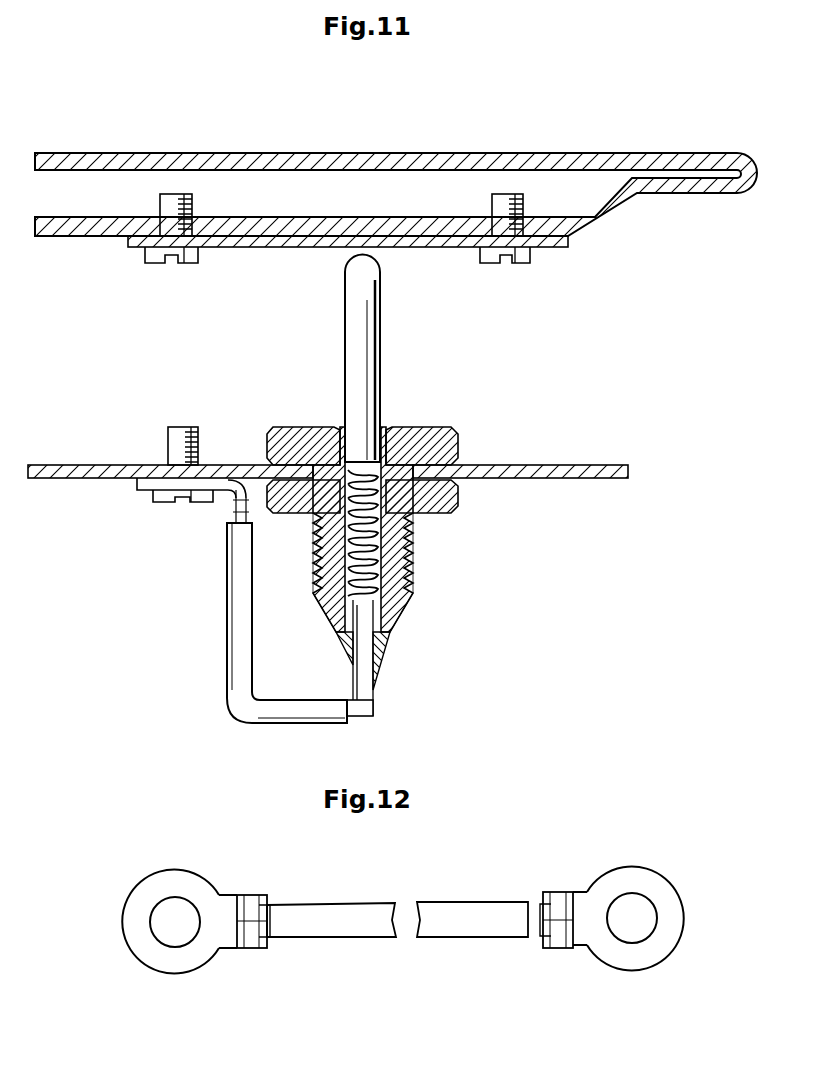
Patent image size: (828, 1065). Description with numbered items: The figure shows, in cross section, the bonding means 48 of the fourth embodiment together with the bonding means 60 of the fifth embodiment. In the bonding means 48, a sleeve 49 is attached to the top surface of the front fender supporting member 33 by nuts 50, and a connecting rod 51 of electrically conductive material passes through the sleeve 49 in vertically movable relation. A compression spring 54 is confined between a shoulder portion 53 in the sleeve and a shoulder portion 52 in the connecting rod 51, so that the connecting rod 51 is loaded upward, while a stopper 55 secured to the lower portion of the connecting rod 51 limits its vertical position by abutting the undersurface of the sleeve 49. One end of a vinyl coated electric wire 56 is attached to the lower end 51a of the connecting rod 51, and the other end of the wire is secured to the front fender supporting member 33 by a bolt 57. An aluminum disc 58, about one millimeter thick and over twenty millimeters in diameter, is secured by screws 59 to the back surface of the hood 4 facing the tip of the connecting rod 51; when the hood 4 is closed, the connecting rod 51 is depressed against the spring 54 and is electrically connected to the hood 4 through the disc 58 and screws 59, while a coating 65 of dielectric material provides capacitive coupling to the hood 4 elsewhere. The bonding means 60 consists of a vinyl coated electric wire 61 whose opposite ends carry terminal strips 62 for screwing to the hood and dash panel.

In FIG. 11, the hood 4 is at (333, 152).
In FIG. 11, the coating of a dielectric material 65 is at (71, 237).
In FIG. 11, the aluminum disc 58 is at (269, 247).
In FIG. 11, the screws 59 is at (180, 263).
In FIG. 11, the connecting rod 51 is at (369, 318).
In FIG. 11, the front fender supporting member 33 is at (553, 478).
In FIG. 11, the bonding means 48 is at (507, 449).
In FIG. 11, the sleeve 49 is at (298, 427).
In FIG. 11, the nuts 50 is at (295, 511).
In FIG. 11, the shoulder portion in the connecting rod 52 is at (373, 470).
In FIG. 11, the compression spring 54 is at (407, 552).
In FIG. 11, the shoulder portion in the sleeve 53 is at (396, 618).
In FIG. 11, the stopper 55 is at (383, 660).
In FIG. 11, the lower end of the connecting rod 51a is at (364, 694).
In FIG. 11, the vinyl coated electric wire 56 is at (228, 657).
In FIG. 11, the bolt 57 is at (165, 496).
In FIG. 12, the terminal strips 62 is at (150, 883).
In FIG. 12, the bonding means 60 is at (317, 915).
In FIG. 12, the vinyl coated electric wire 61 is at (462, 927).